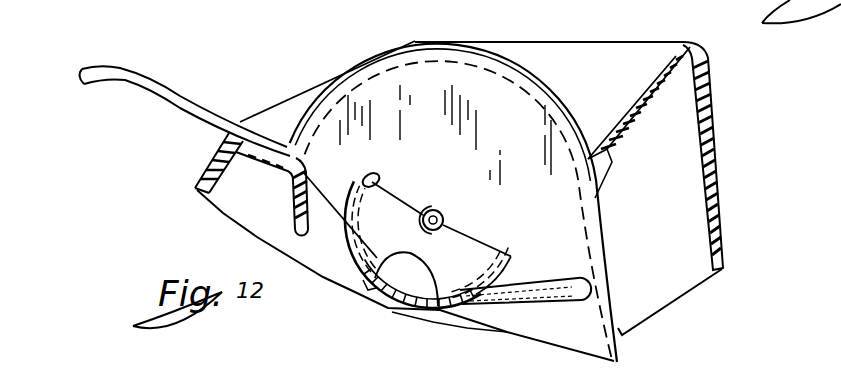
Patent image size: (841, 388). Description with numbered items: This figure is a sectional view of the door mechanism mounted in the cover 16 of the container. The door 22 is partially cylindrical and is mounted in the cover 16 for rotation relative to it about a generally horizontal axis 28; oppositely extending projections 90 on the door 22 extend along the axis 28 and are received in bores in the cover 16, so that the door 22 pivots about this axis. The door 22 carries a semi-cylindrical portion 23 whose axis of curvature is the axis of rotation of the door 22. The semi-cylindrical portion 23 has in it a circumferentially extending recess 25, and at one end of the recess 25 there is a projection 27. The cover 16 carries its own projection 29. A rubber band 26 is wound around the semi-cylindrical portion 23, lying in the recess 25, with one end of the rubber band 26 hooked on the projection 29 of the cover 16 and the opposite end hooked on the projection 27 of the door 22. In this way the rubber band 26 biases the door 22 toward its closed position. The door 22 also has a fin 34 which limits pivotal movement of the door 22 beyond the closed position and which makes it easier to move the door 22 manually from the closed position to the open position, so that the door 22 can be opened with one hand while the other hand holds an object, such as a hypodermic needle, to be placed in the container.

The cover 16 is at (716, 121).
The door 22 is at (488, 78).
The semi-cylindrical portion 23 is at (467, 241).
The recess 25 is at (407, 253).
The rubber band 26 is at (546, 280).
The projection 27 is at (376, 174).
The axis 28 is at (450, 216).
The projection 29 is at (583, 283).
The fin 34 is at (118, 67).
The projections 90 is at (419, 205).